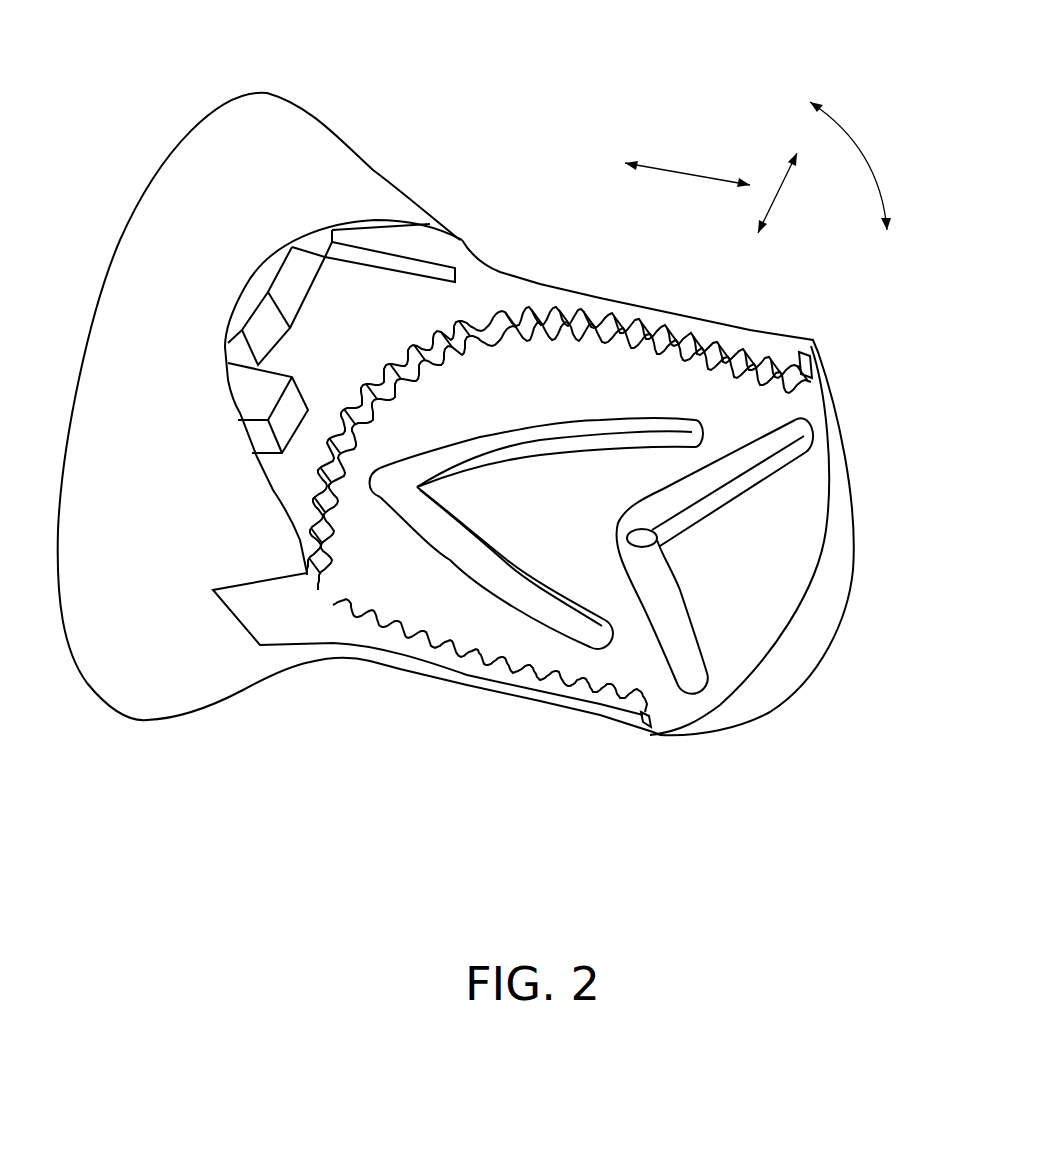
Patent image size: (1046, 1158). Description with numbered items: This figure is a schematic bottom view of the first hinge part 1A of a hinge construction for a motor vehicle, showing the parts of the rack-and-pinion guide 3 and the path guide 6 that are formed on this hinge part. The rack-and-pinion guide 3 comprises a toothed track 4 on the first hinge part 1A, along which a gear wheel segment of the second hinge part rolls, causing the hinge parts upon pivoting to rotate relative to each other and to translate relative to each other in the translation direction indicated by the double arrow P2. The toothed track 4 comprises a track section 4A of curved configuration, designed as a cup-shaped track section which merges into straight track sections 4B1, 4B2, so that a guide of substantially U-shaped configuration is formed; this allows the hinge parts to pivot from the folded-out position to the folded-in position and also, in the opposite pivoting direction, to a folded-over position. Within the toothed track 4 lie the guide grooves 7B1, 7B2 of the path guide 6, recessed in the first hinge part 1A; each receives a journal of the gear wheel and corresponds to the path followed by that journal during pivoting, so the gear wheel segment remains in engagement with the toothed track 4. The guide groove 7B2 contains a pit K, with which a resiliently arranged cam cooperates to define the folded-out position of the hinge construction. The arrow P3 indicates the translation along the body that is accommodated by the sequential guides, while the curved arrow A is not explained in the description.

The first hinge part 1A is at (290, 160).
The rack-and-pinion guide 3 is at (785, 330).
The toothed track 4 is at (559, 442).
The track section of curved configuration 4A is at (392, 362).
The straight track section 4B1 is at (497, 663).
The straight track section 4B2 is at (612, 320).
The path guide 6 is at (519, 500).
The guide groove 7B1 is at (492, 572).
The guide groove 7B2 is at (768, 636).
The pit K is at (645, 538).
The translation direction P2 is at (688, 170).
The translation along the body P3 is at (780, 190).
The rotation direction A is at (860, 140).